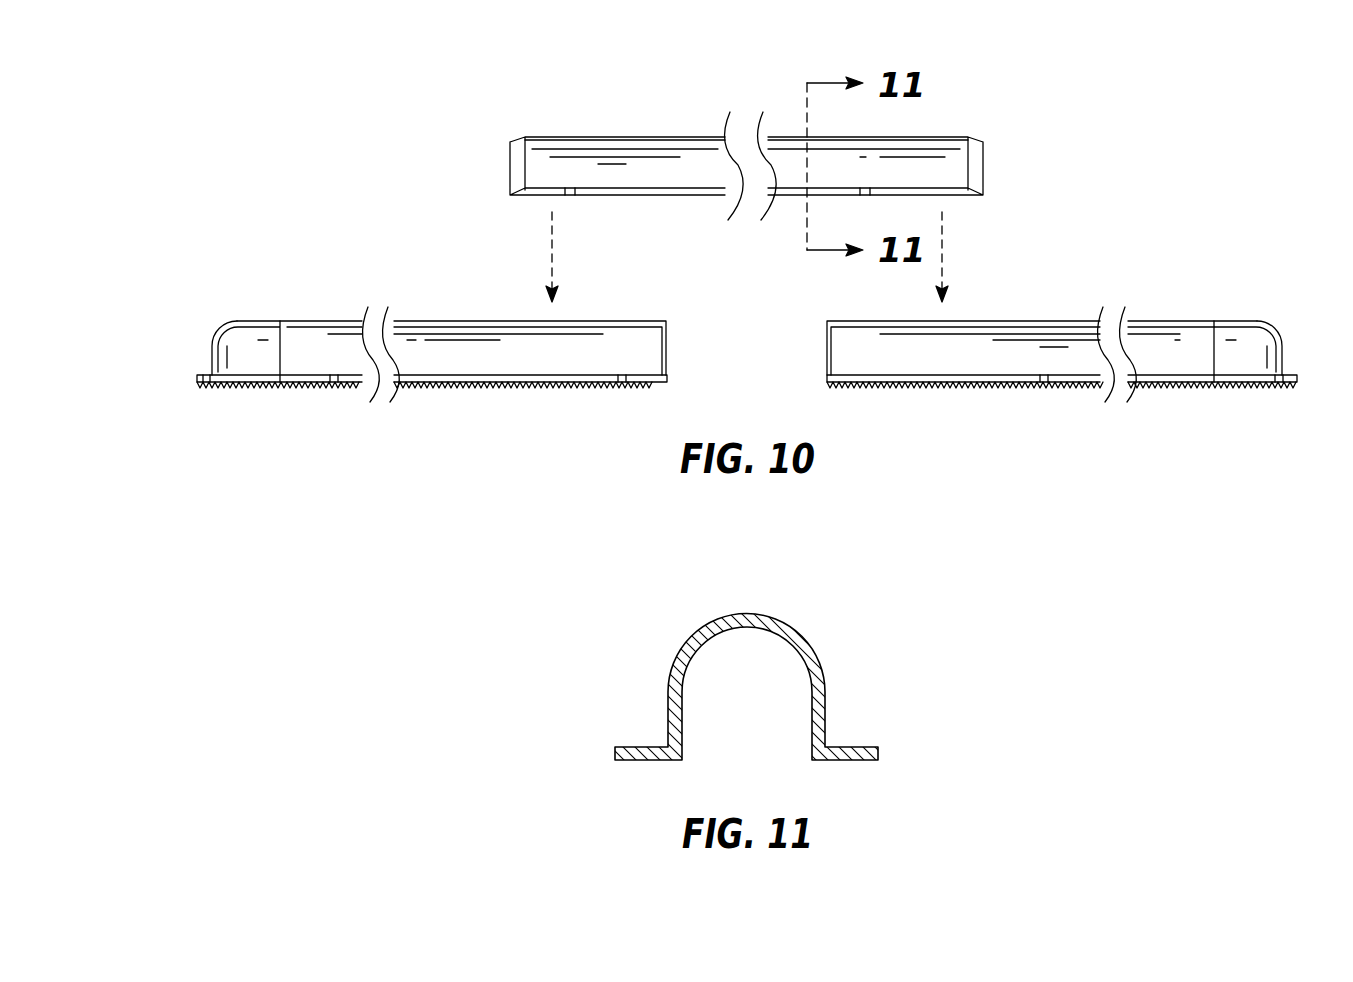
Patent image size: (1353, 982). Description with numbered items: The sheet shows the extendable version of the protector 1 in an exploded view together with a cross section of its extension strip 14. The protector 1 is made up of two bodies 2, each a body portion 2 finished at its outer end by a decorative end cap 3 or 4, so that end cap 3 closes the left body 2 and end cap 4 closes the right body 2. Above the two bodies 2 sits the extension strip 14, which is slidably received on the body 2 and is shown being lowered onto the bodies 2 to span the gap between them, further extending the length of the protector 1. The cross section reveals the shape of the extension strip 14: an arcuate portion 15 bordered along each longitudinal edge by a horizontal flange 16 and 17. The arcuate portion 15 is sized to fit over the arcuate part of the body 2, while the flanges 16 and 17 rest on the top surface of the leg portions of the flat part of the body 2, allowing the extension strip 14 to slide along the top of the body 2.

In FIG. 10, the protector 1 is at (292, 453).
In FIG. 10, the body portion 2 is at (436, 330).
In FIG. 10, the decorative end cap 3 is at (244, 340).
In FIG. 10, the decorative end cap 4 is at (1250, 340).
In FIG. 10, the extension strip 14 is at (592, 145).
In FIG. 11, the extension strip 14 is at (647, 613).
In FIG. 11, the arcuate portion 15 is at (792, 636).
In FIG. 11, the horizontal flange 16 is at (630, 753).
In FIG. 11, the horizontal flange 17 is at (853, 753).